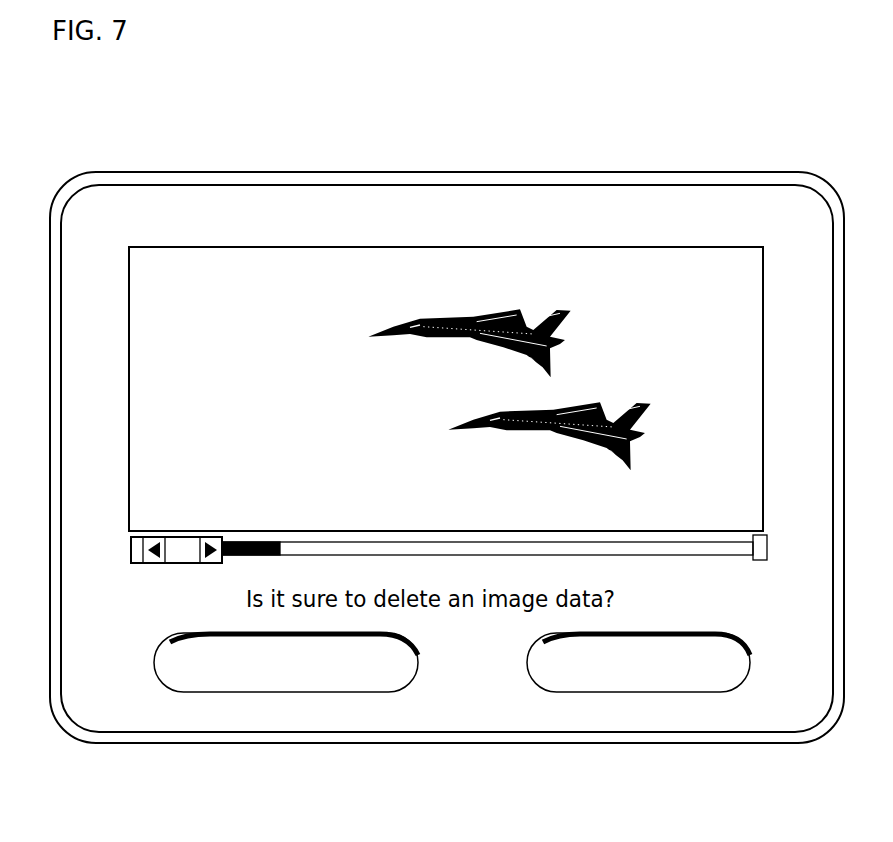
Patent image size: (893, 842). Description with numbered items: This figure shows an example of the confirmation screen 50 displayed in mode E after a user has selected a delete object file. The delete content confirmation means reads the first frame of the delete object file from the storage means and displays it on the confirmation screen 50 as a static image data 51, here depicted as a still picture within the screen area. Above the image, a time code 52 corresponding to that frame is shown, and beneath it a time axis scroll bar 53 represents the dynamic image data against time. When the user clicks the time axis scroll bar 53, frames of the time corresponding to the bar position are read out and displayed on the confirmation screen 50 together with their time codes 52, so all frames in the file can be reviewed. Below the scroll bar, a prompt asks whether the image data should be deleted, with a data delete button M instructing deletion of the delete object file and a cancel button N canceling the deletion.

The confirmation screen 50 is at (138, 157).
The static image data 51 is at (550, 204).
The time code 52 is at (249, 207).
The time axis scroll bar 53 is at (161, 585).
The data delete button M is at (294, 700).
The cancel button N is at (644, 700).